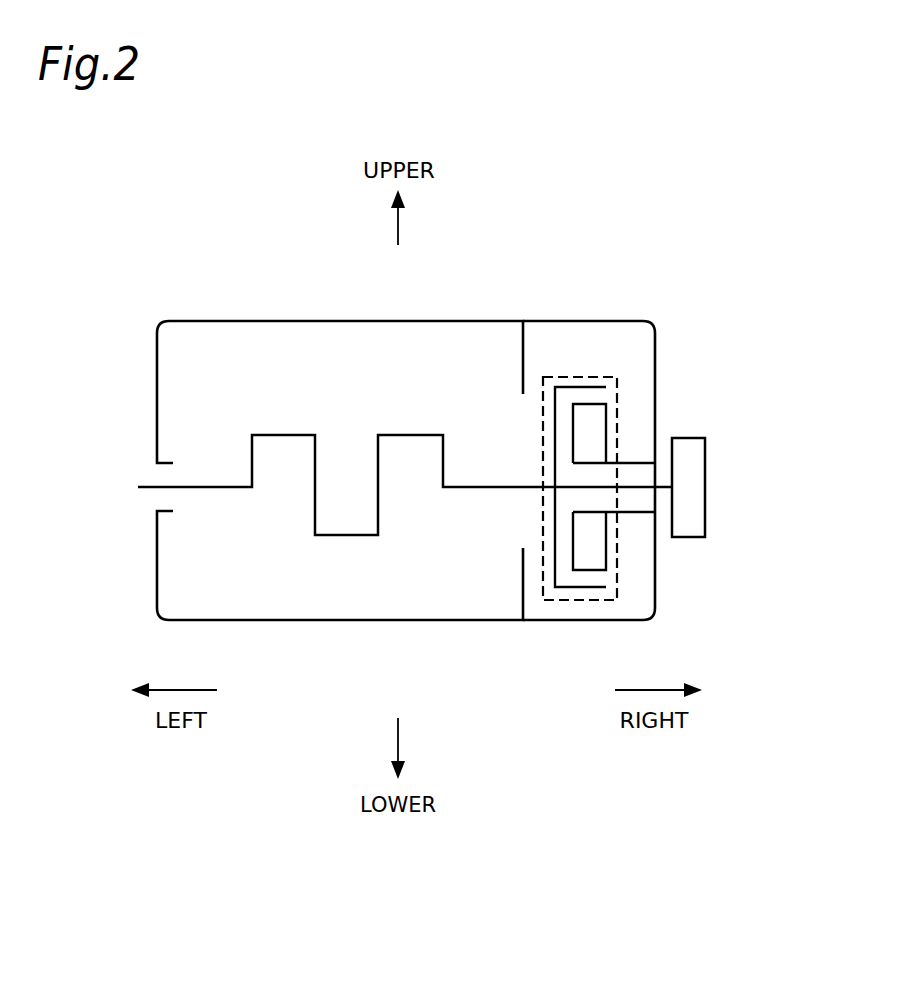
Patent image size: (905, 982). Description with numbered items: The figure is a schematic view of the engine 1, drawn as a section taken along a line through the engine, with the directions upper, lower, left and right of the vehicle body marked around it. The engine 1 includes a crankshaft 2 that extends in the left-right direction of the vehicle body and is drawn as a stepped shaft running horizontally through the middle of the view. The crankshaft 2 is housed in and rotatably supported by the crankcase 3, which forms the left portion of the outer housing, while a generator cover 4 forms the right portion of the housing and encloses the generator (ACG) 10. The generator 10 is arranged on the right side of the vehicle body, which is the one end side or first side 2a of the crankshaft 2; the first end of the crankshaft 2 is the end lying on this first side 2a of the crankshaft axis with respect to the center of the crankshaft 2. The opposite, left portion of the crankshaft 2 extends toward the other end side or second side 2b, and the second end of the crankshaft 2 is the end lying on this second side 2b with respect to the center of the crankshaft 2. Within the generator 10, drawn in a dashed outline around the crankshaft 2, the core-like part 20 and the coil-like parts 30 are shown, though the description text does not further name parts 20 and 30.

The engine 1 is at (238, 307).
The crankshaft 2 is at (463, 486).
The one end side (first side) of the crankshaft 2a is at (528, 490).
The other end side (second side) of the crankshaft 2b is at (172, 489).
The crankcase 3 is at (466, 320).
The generator cover 4 is at (555, 320).
The generator (ACG) 10 is at (634, 379).
The stator core 20 is at (577, 386).
The coil 30 is at (606, 428).